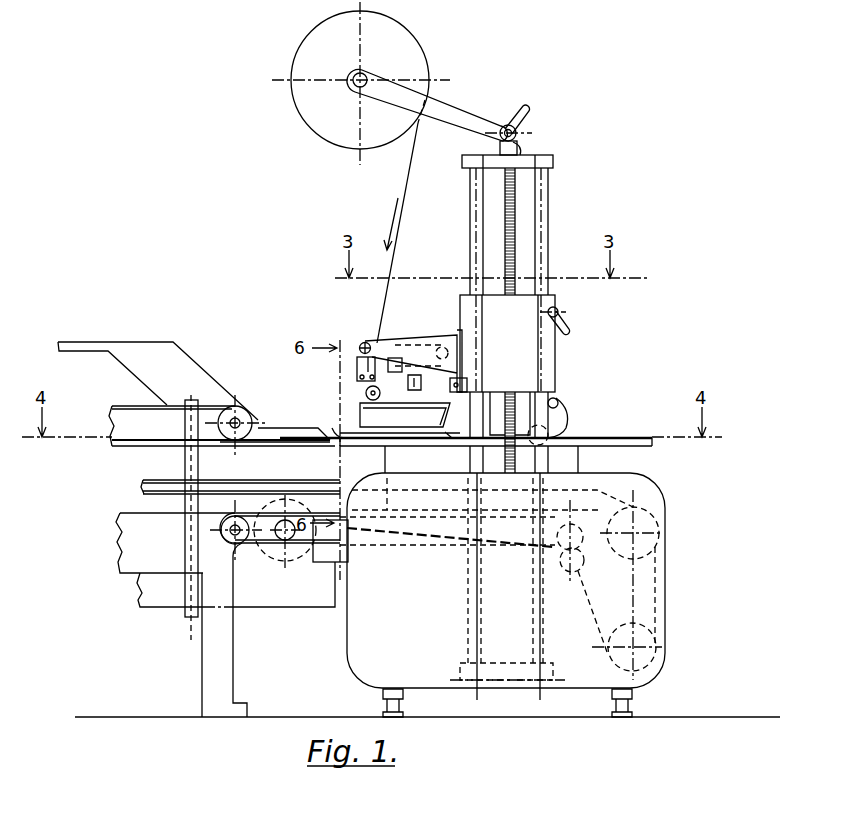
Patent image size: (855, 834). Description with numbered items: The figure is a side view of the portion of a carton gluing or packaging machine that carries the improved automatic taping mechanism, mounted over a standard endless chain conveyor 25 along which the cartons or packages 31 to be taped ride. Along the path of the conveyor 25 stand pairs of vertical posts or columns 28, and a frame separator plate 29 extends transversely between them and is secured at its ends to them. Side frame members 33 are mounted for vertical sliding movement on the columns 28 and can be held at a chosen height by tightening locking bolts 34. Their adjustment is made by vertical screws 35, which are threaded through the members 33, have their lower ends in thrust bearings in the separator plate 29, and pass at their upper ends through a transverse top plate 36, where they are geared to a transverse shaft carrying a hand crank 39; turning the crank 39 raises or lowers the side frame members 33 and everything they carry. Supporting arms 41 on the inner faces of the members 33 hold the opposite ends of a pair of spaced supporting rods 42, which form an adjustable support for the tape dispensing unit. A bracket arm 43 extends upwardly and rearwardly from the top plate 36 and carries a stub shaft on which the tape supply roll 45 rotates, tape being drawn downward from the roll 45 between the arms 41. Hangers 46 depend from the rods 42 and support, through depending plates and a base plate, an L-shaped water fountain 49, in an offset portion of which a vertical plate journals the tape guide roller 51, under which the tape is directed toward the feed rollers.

The conveyor 25 is at (420, 488).
The vertical posts or columns 28 is at (462, 622).
The frame separator plate 29 is at (460, 532).
The cartons or packages 31 is at (578, 452).
The side frame members 33 is at (485, 305).
The locking bolts 34 is at (566, 318).
The vertical screws 35 is at (512, 218).
The transverse top plate 36 is at (553, 157).
The hand crank 39 is at (514, 123).
The supporting arms 41 is at (404, 325).
The supporting rods 42 is at (365, 342).
The bracket arm 43 is at (448, 108).
The tape supply roll 45 is at (385, 38).
The hangers 46 is at (357, 368).
The L-shaped water fountain 49 is at (386, 409).
The tape guide roller 51 is at (380, 392).